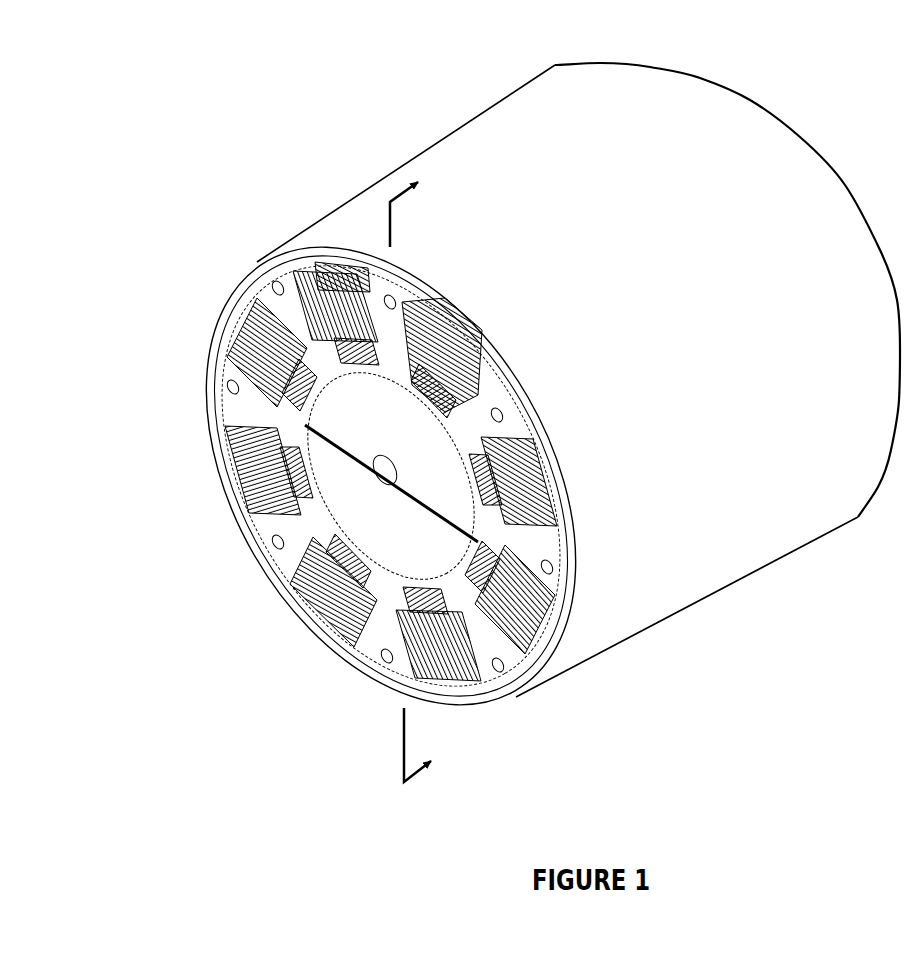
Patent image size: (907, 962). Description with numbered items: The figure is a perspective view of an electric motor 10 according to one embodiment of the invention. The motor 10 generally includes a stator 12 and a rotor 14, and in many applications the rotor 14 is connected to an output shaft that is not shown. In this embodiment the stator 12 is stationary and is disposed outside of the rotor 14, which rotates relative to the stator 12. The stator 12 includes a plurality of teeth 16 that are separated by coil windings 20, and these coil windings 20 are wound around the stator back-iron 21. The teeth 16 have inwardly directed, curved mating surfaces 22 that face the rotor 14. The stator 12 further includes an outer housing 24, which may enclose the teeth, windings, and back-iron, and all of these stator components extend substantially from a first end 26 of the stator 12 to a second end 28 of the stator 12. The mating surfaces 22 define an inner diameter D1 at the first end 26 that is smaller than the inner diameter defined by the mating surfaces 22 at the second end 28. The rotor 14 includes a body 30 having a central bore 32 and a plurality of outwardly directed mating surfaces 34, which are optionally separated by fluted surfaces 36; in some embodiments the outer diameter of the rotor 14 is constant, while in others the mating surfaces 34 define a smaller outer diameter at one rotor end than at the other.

The motor 10 is at (195, 180).
The stator 12 is at (374, 181).
The rotor 14 is at (305, 414).
The teeth 16 is at (318, 513).
The coil windings 20 is at (237, 333).
The stator back-iron 21 is at (255, 422).
The mating surfaces 22 is at (398, 426).
The outer housing 24 is at (708, 600).
The first end 26 is at (218, 291).
The second end 28 is at (540, 63).
The body 30 is at (367, 505).
The central bore 32 is at (392, 476).
The mating surfaces 34 is at (483, 530).
The fluted surfaces 36 is at (438, 436).
The inner diameter D1 is at (425, 510).